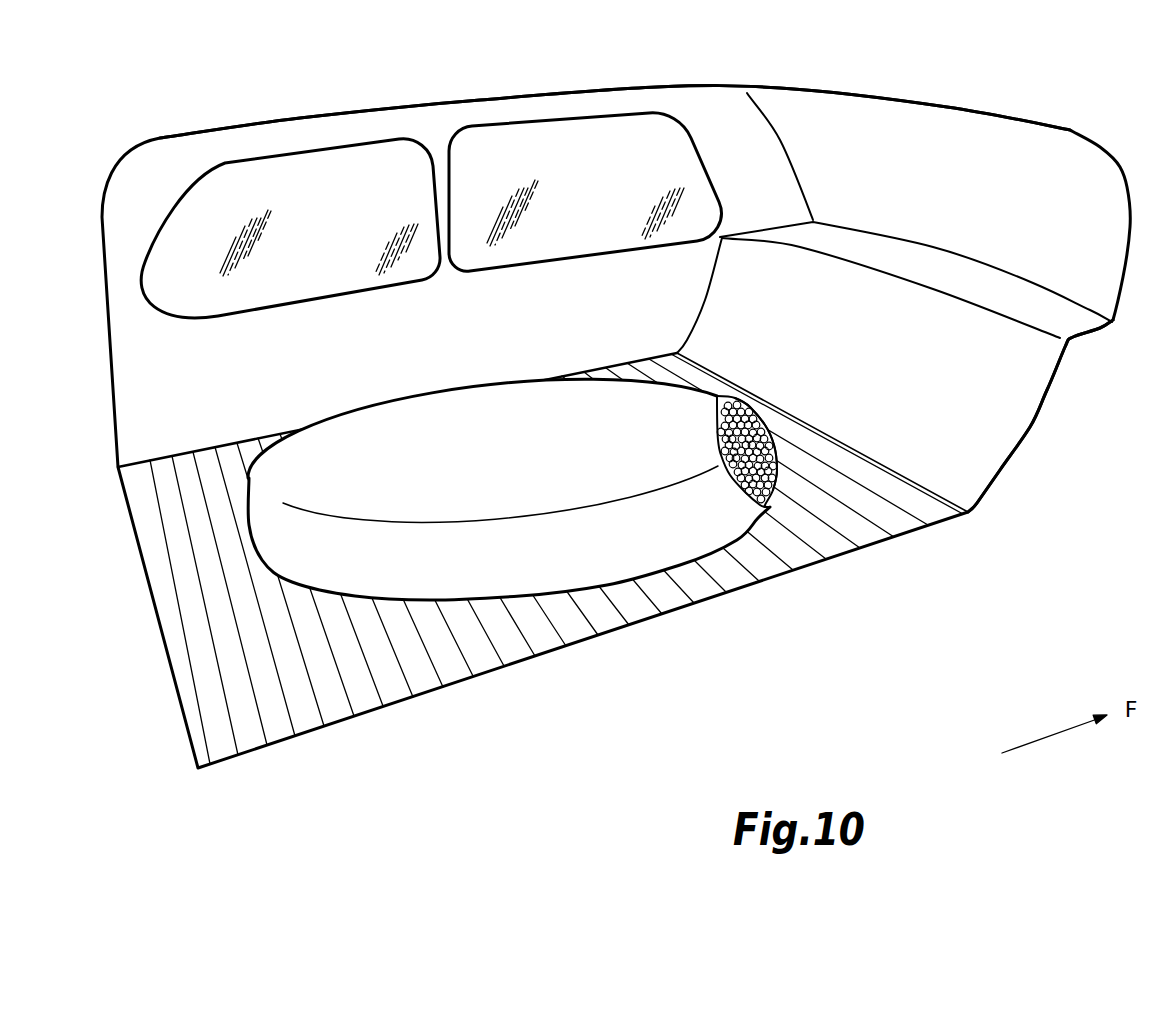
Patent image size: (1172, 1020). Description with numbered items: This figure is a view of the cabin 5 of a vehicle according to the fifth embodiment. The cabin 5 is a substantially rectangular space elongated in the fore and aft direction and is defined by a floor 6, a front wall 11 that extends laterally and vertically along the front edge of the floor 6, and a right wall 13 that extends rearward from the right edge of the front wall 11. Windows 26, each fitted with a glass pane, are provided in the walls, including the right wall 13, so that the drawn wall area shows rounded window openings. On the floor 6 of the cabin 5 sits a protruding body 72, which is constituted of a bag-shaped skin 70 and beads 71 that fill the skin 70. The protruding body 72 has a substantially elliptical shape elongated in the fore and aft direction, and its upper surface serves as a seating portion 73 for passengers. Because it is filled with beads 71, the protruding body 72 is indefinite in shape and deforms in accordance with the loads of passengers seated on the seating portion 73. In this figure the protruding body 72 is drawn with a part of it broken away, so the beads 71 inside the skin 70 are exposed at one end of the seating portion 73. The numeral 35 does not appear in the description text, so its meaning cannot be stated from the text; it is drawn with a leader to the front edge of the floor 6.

The cabin 5 is at (529, 300).
The floor 6 is at (842, 513).
The front wall 11 is at (1012, 408).
The right wall 13 is at (660, 87).
The windows 26 is at (492, 142).
The floor 35 is at (603, 623).
The skin 70 is at (738, 412).
The beads 71 is at (768, 461).
The protruding body 72 is at (465, 570).
The seating portion 73 is at (494, 461).